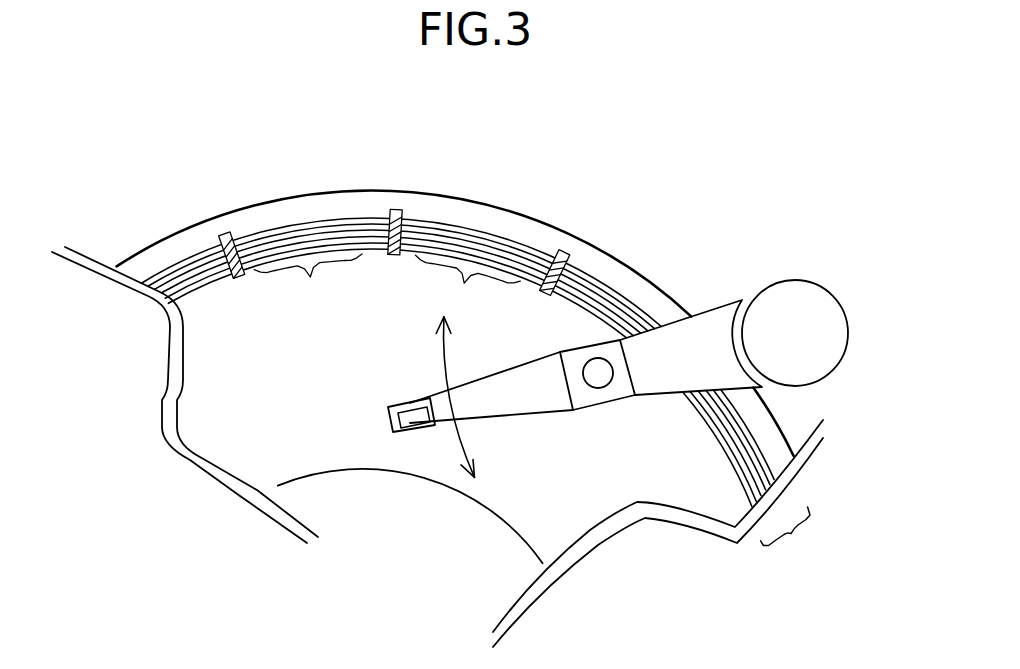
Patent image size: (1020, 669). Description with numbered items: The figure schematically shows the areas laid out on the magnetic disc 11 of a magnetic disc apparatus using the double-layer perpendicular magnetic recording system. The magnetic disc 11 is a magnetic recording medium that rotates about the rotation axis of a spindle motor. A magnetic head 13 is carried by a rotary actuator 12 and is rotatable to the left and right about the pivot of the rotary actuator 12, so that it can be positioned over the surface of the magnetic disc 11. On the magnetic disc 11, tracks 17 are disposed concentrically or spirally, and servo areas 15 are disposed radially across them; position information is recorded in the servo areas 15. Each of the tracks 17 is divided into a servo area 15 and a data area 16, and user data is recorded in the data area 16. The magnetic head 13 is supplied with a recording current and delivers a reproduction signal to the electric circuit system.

The magnetic disc 11 is at (540, 222).
The rotary actuator 12 is at (818, 297).
The magnetic head 13 is at (392, 430).
The servo area 15 is at (548, 256).
The data area 16 is at (460, 287).
The track 17 is at (792, 542).